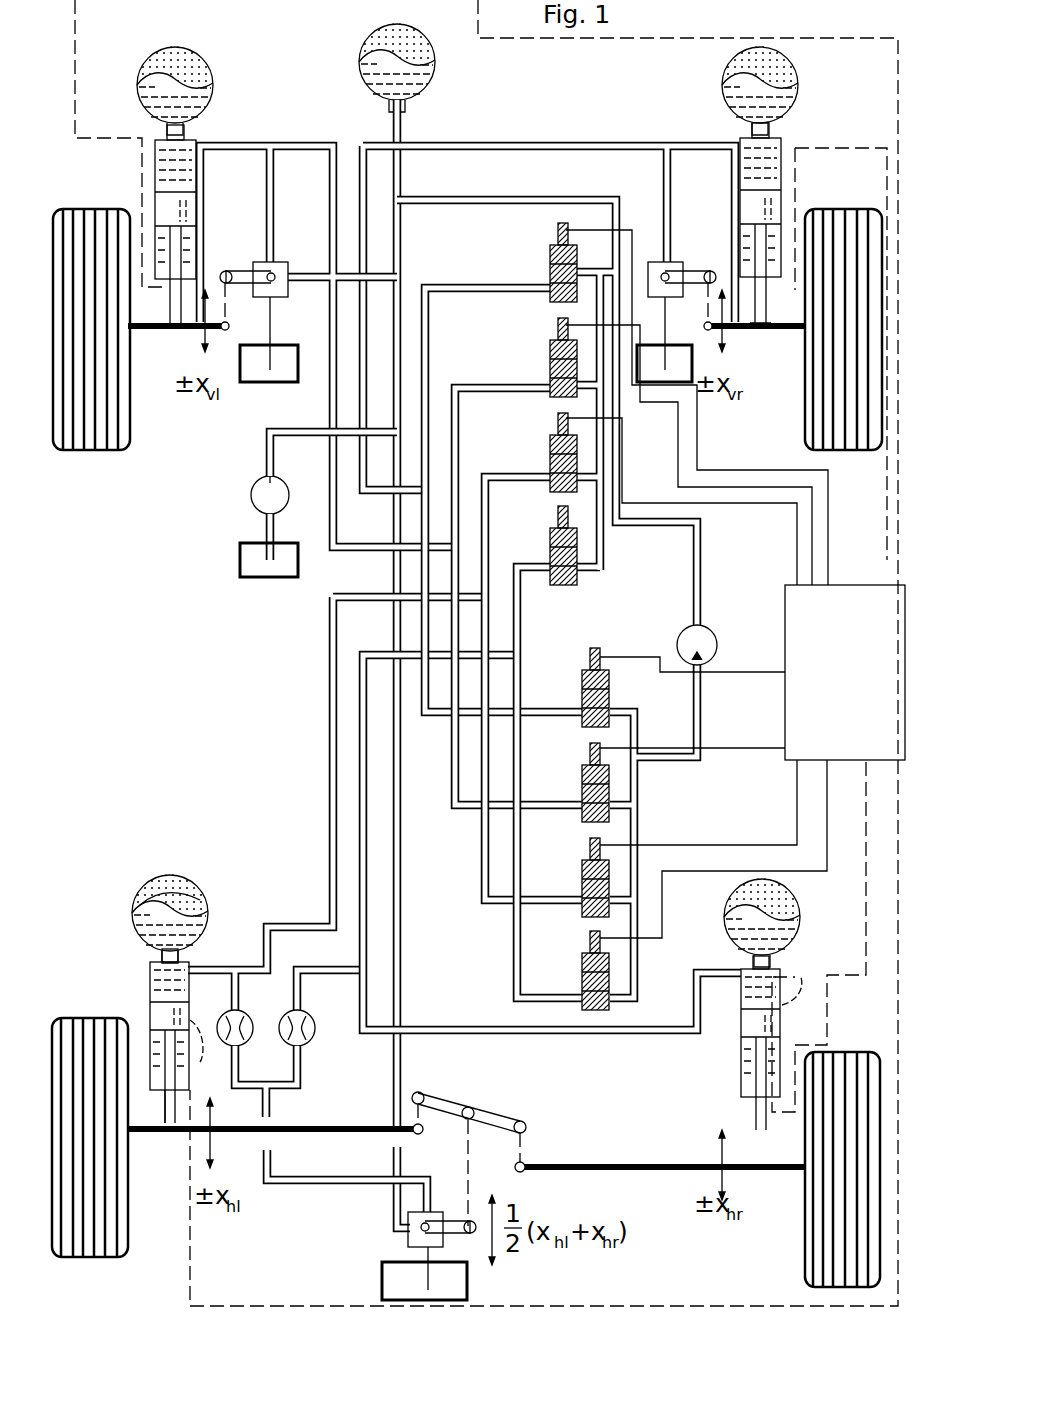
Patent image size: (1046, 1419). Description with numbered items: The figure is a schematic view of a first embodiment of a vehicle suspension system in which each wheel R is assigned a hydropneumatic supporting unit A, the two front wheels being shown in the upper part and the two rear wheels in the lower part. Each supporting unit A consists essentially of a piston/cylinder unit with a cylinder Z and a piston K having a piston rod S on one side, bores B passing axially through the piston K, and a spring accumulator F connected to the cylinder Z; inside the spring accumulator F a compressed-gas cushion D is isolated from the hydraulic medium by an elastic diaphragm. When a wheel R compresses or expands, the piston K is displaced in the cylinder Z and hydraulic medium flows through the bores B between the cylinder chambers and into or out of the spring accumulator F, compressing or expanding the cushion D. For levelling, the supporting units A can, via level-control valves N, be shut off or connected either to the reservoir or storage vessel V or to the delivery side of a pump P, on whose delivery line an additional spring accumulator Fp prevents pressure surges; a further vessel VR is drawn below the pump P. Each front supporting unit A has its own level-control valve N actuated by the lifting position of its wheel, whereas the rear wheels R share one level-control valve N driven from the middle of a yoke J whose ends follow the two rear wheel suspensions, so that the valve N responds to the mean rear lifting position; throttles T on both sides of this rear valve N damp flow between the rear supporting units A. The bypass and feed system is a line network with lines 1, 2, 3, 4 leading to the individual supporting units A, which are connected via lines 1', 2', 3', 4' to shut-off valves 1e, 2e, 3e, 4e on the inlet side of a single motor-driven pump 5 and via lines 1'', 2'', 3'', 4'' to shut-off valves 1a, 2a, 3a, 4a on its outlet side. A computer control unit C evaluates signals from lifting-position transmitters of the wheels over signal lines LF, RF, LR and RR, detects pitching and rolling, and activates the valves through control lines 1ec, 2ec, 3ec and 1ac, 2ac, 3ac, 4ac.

The line 1 is at (549, 285).
The line 2 is at (327, 314).
The line 3 is at (336, 803).
The line 4 is at (552, 842).
The motor-driven pump 5 is at (717, 648).
The shut-off valve 1e is at (550, 276).
The shut-off valve 2e is at (550, 370).
The shut-off valve 3e is at (550, 464).
The shut-off valve 4e is at (550, 560).
The shut-off valve 1a is at (582, 702).
The shut-off valve 2a is at (582, 798).
The shut-off valve 3a is at (582, 890).
The shut-off valve 4a is at (582, 990).
The line 1' is at (503, 475).
The line 2' is at (518, 568).
The line 3' is at (527, 661).
The line 4' is at (549, 782).
The line 1'' is at (542, 733).
The line 2'' is at (556, 824).
The line 3'' is at (560, 920).
The line 4'' is at (551, 1015).
The control line 1ec is at (790, 470).
The control line 2ec is at (744, 487).
The control line 3ec is at (762, 503).
The control line 1ac is at (732, 672).
The control line 2ac is at (744, 748).
The control line 3ac is at (660, 845).
The control line 4ac is at (770, 871).
The hydropneumatic supporting unit A is at (152, 128).
The wheel R is at (90, 218).
The cylinder Z is at (196, 178).
The piston K is at (150, 1012).
The level-control valve N is at (262, 262).
The reservoir or storage vessel V is at (282, 382).
The return reservoir VR is at (278, 577).
The pump P is at (251, 497).
The additional spring accumulator Fp is at (364, 46).
The computer control unit C is at (853, 686).
The spring accumulator F is at (150, 882).
The compressed-gas cushion D is at (185, 895).
The bores B is at (502, 1030).
The piston rod S is at (165, 1122).
The throttle T is at (255, 1050).
The yoke J is at (478, 1110).
The signal line LF is at (864, 467).
The signal line RF is at (887, 520).
The signal line RR is at (851, 819).
The signal line LR is at (880, 856).